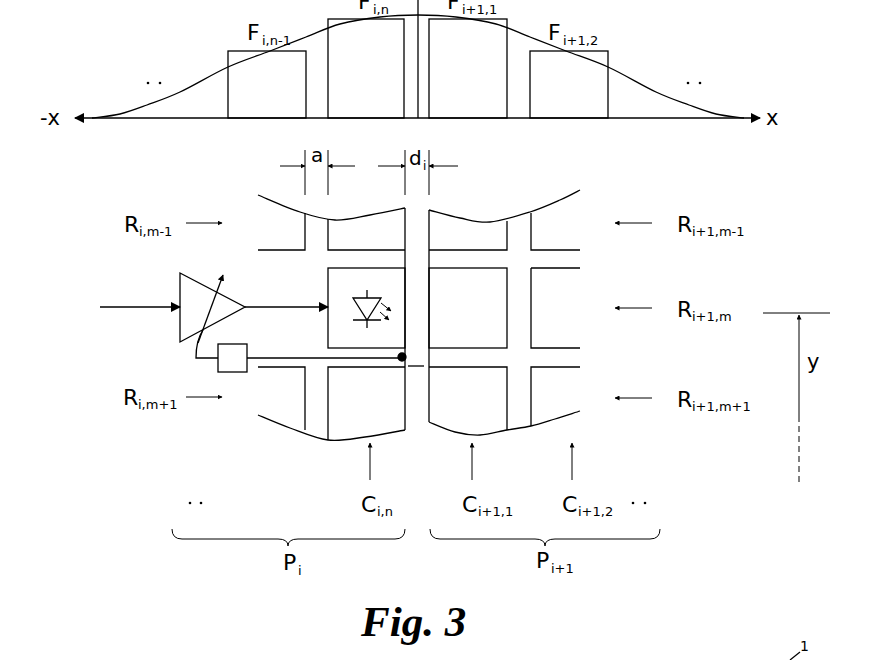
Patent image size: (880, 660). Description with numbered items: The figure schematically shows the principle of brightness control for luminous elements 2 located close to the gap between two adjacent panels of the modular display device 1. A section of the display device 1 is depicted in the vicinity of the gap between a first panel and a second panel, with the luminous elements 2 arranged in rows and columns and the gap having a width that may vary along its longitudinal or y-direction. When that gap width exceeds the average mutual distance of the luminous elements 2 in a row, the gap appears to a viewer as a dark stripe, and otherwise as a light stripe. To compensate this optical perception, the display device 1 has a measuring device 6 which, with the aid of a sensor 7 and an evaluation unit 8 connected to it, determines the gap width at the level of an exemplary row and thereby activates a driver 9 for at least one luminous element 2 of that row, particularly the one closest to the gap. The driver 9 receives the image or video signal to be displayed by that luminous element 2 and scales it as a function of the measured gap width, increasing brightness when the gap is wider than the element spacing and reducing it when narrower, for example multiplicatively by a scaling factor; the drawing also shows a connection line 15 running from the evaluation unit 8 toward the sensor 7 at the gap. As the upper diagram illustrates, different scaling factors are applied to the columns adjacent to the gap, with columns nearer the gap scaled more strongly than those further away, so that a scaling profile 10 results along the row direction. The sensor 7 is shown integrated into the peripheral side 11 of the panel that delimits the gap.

The modular display device 1 is at (313, 354).
The luminous elements 2 is at (400, 288).
The measuring device 6 is at (262, 395).
The sensor 7 is at (401, 361).
The evaluation unit 8 is at (234, 373).
The driver 9 is at (178, 325).
The scaling profile 10 is at (643, 80).
The peripheral side 11 is at (407, 416).
The connection line 15 is at (272, 358).